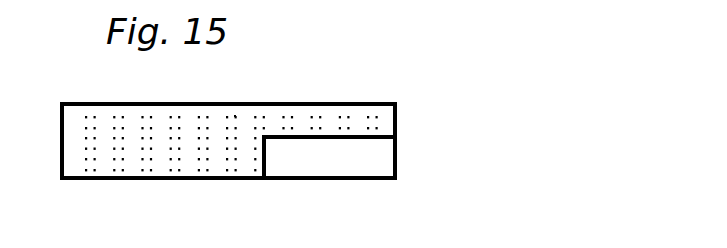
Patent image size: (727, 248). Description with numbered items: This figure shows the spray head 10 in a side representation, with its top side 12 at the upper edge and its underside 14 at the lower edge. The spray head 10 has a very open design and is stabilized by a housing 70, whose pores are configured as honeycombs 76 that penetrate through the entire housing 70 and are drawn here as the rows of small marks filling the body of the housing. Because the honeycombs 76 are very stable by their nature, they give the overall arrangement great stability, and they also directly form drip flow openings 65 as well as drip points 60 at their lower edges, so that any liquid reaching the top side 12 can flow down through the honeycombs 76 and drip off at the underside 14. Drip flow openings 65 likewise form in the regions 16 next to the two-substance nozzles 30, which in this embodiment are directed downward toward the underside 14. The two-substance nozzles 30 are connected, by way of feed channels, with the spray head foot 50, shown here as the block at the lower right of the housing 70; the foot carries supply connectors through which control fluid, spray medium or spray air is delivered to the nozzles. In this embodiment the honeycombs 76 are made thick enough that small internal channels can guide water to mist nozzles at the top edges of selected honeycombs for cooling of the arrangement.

The spray head 10 is at (323, 88).
The top side 12 is at (176, 87).
The underside 14 is at (175, 223).
The regions 16 is at (262, 181).
The two-substance nozzles 30 is at (193, 181).
The spray head foot 50 is at (360, 172).
The drip points 60 is at (209, 180).
The drip flow openings 65 is at (232, 180).
The housing 70 is at (95, 102).
The honeycombs 76 is at (236, 117).